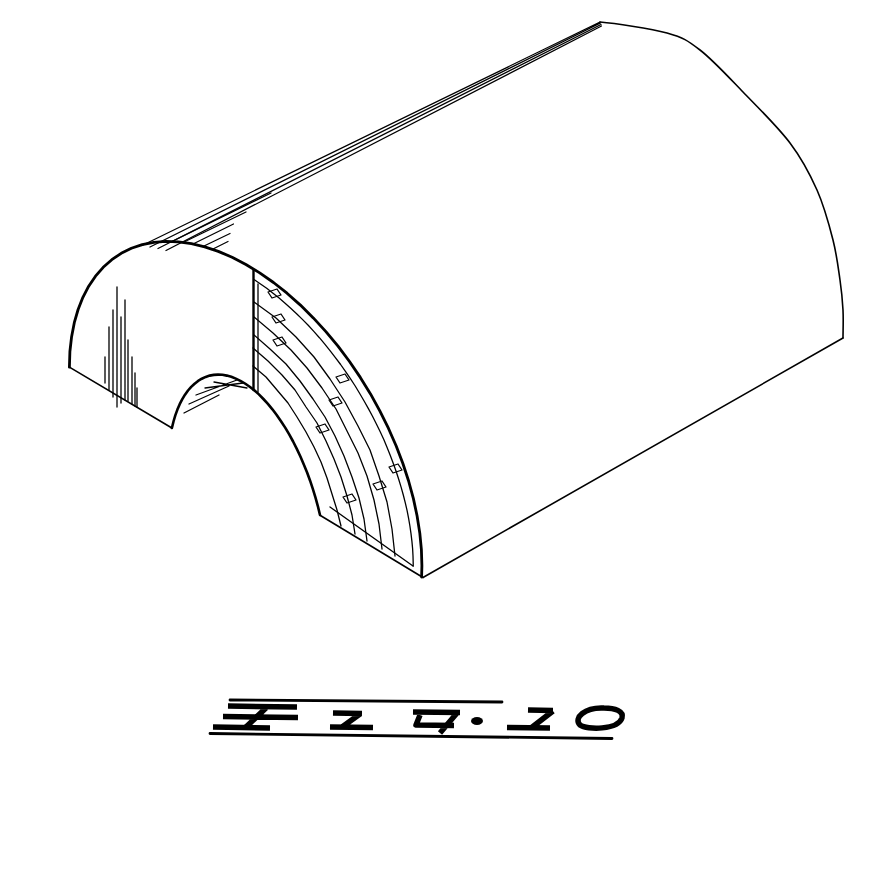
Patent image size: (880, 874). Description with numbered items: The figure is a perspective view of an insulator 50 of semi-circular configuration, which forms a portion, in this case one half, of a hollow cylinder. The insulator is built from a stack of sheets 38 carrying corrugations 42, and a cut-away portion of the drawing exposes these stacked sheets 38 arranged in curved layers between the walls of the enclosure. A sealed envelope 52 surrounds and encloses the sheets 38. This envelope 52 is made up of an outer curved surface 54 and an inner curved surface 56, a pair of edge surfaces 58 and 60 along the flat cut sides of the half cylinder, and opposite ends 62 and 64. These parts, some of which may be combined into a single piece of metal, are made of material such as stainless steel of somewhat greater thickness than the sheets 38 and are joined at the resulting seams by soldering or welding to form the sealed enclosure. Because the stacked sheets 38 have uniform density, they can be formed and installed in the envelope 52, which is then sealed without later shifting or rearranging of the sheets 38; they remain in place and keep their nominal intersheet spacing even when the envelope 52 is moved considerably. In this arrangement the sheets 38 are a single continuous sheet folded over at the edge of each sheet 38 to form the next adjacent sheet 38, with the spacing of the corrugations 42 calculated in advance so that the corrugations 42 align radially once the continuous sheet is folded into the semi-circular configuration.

The sheets 38 is at (337, 346).
The corrugations 42 is at (345, 378).
The insulator 50 is at (199, 426).
The sealed envelope 52 is at (536, 505).
The outer curved surface 54 is at (752, 376).
The inner curved surface 56 is at (226, 396).
The edge surface 58 is at (145, 418).
The edge surface 60 is at (377, 550).
The end 62 is at (93, 367).
The end 64 is at (743, 93).